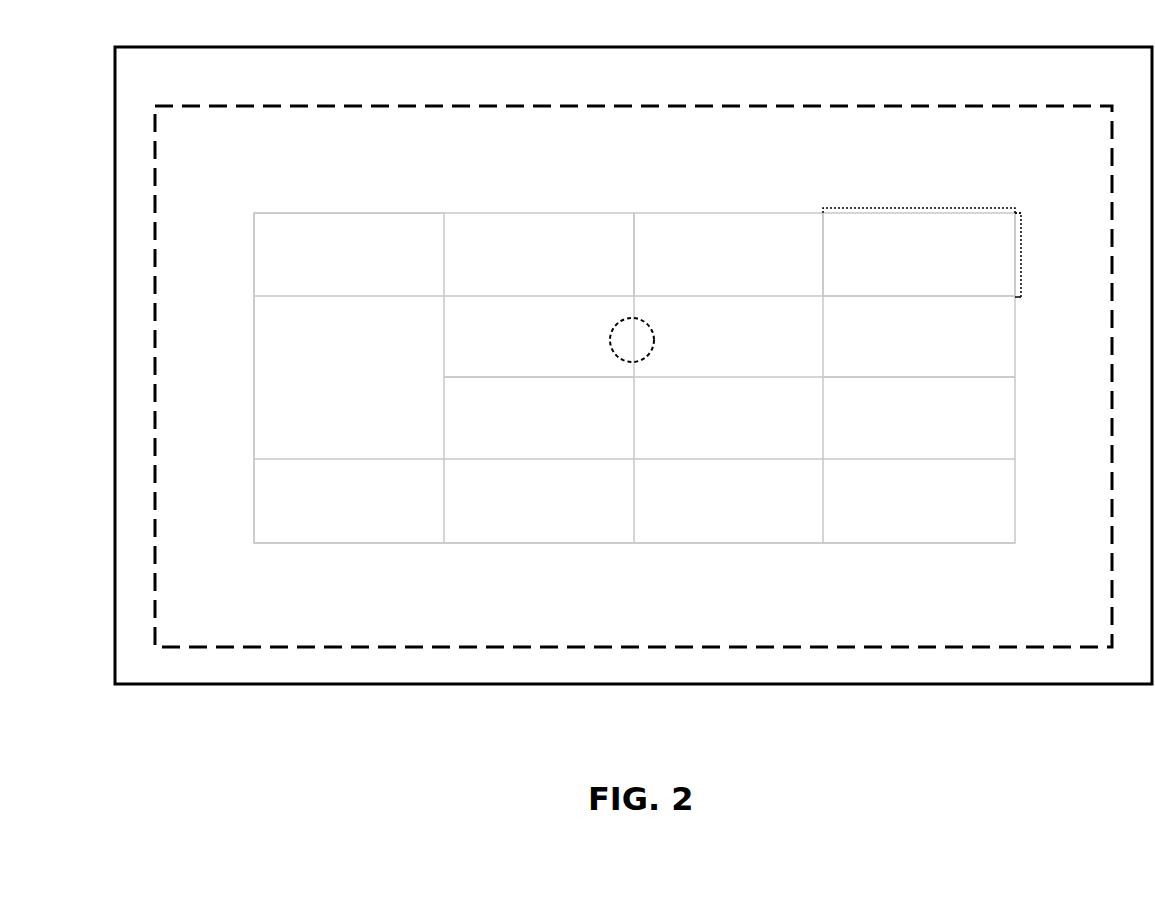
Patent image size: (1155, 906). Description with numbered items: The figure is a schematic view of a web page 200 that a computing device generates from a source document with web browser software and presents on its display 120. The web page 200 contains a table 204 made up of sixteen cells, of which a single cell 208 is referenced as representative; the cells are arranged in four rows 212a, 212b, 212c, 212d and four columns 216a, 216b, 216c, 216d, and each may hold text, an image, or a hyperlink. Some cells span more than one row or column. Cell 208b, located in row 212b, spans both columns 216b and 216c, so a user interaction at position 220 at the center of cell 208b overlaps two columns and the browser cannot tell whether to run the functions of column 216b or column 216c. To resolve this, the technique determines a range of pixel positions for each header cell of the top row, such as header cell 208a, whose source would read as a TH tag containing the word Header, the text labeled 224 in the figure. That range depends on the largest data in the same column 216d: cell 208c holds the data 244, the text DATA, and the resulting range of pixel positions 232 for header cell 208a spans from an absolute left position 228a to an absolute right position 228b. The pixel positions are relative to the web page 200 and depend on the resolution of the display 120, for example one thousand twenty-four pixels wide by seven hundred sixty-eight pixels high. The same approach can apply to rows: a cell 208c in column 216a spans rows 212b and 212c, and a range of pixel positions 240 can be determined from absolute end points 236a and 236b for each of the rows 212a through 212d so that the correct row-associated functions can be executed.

The display 120 is at (634, 47).
The web page 200 is at (633, 647).
The table 204 is at (290, 162).
The cell 208 is at (382, 262).
The header cell 208a is at (890, 283).
The cell 208b is at (716, 338).
The cell 208c is at (1012, 402).
The row 212a is at (240, 259).
The row 212b is at (240, 342).
The row 212c is at (240, 425).
The row 212d is at (240, 505).
The column 216a is at (342, 553).
The column 216b is at (541, 553).
The column 216c is at (734, 553).
The column 216d is at (921, 553).
The position of user interaction 220 is at (625, 318).
The header text 224 is at (918, 280).
The absolute left position 228a is at (823, 200).
The absolute right position 228b is at (1015, 200).
The range of pixel positions 232 is at (915, 208).
The absolute end point 236a is at (1040, 215).
The absolute end point 236b is at (1036, 297).
The range of pixel positions 240 is at (1022, 255).
The data 244 is at (932, 462).